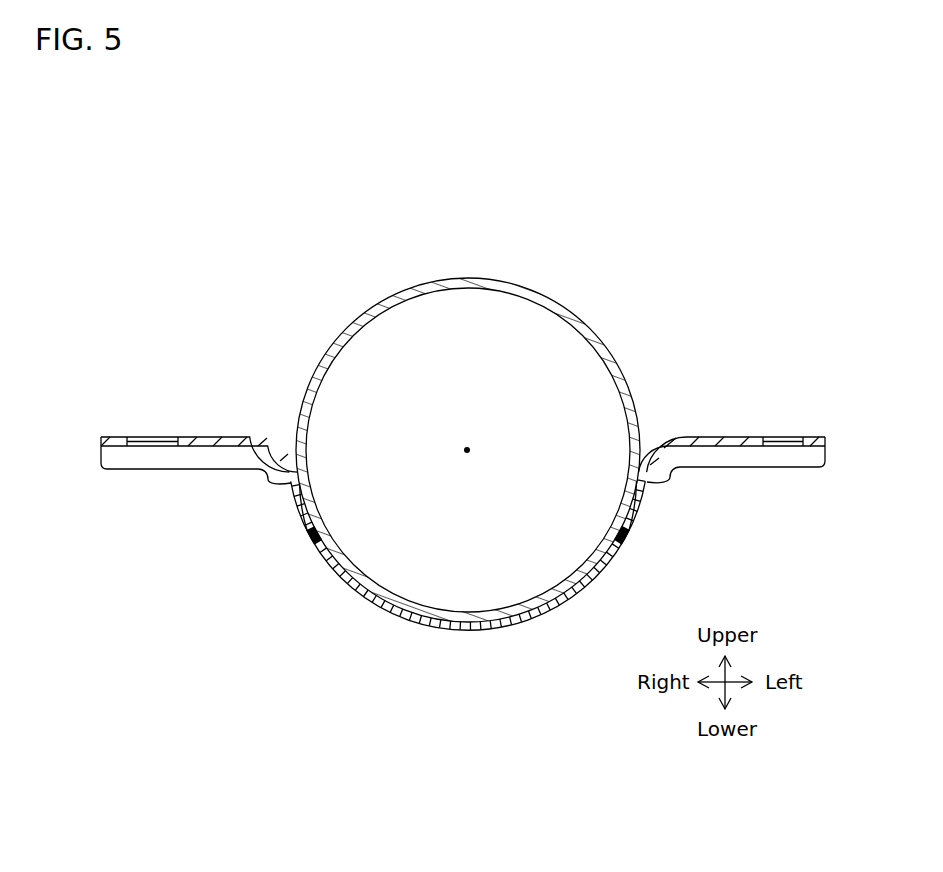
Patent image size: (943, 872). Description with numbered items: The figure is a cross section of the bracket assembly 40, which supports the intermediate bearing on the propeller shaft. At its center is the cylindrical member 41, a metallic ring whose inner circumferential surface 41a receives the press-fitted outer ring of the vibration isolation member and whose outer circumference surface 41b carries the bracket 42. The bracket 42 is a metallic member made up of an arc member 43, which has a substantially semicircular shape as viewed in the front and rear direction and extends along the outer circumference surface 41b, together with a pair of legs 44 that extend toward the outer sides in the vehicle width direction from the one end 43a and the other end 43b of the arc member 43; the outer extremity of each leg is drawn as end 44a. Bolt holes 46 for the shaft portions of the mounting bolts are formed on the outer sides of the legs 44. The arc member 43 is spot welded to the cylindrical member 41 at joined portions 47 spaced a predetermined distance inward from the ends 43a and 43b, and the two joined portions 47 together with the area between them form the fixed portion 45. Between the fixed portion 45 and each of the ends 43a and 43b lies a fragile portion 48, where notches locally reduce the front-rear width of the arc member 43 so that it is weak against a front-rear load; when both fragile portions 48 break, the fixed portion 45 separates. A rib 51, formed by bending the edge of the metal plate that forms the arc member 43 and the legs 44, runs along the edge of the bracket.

The bracket assembly 40 is at (641, 266).
The cylindrical member 41 is at (468, 415).
The inner circumferential surface 41a is at (360, 330).
The outer circumference surface 41b is at (405, 288).
The bracket 42 is at (369, 608).
The arc member 43 is at (469, 537).
The fixed portion 45 is at (469, 537).
The one end of the arc member 43a is at (665, 482).
The other end of the arc member 43b is at (294, 479).
The leg 44 is at (469, 421).
The arm end 44a is at (100, 440).
The bolt hole 46 is at (151, 434).
The joined portion 47 is at (314, 542).
The fragile portion 48 is at (301, 507).
The rib 51 is at (133, 460).